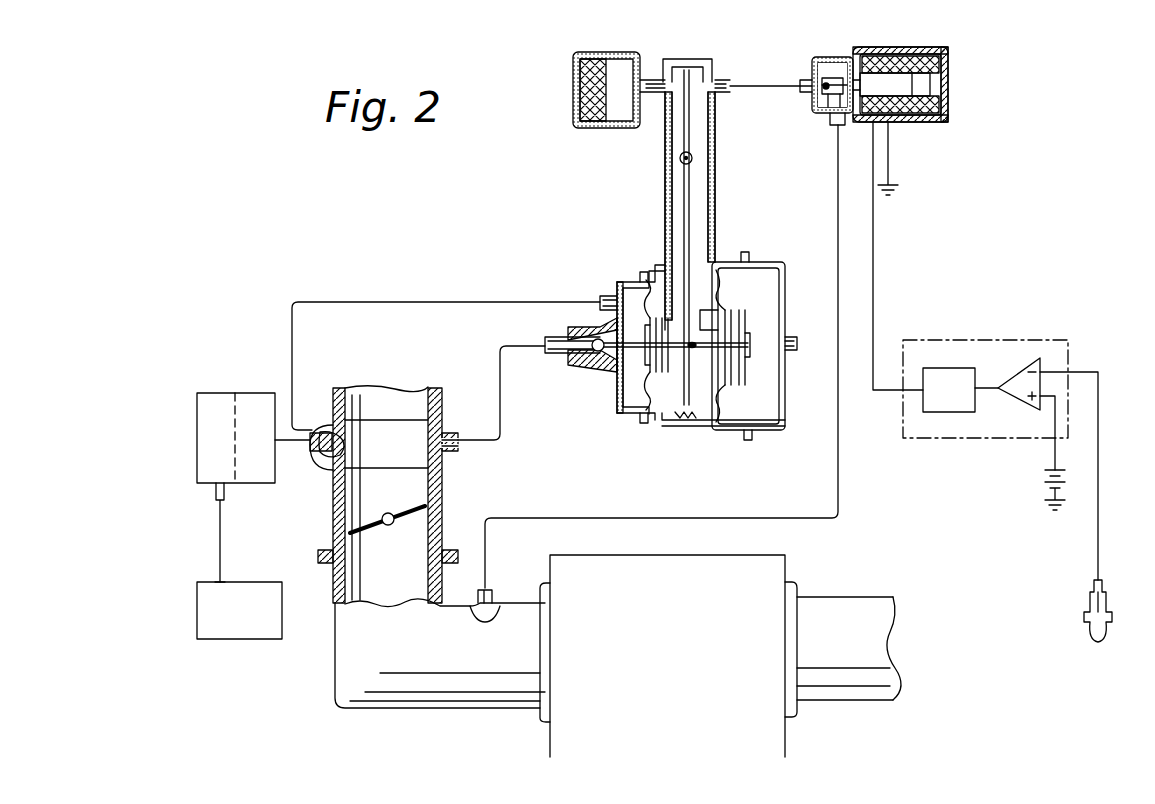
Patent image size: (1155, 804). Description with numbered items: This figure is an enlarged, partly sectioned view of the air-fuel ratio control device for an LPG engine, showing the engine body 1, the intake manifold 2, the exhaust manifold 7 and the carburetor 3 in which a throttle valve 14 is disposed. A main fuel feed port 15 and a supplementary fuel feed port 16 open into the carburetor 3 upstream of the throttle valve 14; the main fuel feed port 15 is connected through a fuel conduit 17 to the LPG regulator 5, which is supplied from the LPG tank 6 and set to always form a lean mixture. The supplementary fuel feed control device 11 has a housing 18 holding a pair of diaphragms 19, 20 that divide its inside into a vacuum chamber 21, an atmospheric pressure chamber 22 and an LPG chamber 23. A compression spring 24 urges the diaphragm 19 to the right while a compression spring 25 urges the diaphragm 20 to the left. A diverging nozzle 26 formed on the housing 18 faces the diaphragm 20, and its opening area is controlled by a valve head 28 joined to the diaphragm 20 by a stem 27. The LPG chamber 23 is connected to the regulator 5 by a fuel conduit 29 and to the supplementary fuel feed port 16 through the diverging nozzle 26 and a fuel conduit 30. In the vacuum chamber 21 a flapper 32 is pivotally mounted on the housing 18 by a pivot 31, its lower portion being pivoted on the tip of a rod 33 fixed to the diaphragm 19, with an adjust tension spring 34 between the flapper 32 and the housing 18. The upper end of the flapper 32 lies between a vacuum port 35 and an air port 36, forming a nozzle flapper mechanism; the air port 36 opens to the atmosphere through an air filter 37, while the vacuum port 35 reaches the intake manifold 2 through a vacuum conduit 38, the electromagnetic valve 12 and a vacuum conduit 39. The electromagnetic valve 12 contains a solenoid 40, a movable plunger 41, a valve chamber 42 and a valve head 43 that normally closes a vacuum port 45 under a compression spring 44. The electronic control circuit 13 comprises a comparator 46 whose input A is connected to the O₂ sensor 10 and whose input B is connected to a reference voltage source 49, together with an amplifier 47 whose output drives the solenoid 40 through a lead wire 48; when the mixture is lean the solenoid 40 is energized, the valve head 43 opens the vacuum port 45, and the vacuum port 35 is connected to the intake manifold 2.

The engine body 1 is at (558, 752).
The intake manifold 2 is at (415, 685).
The carburetor 3 is at (442, 482).
The regulator 5 is at (210, 397).
The LPG tank 6 is at (220, 632).
The exhaust manifold 7 is at (842, 686).
The O₂ sensor 10 is at (1094, 606).
The supplementary fuel feed control device 11 is at (739, 252).
The electromagnetic valve 12 is at (905, 37).
The electronic control circuit 13 is at (997, 326).
The throttle valve 14 is at (355, 528).
The main fuel feed port 15 is at (362, 410).
The supplementary fuel feed port 16 is at (425, 408).
The fuel conduit 17 is at (290, 445).
The housing 18 is at (712, 194).
The diaphragm 19 is at (745, 310).
The diaphragm 20 is at (648, 410).
The vacuum chamber 21 is at (676, 343).
The atmospheric pressure chamber 22 is at (780, 410).
The LPG chamber 23 is at (615, 395).
The compression spring 24 is at (735, 420).
The compression spring 25 is at (660, 270).
The diverging nozzle 26 is at (580, 330).
The stem 27 is at (603, 368).
The valve head 28 is at (566, 352).
The fuel conduit 29 is at (438, 302).
The fuel conduit 30 is at (498, 441).
The pivot 31 is at (693, 158).
The flapper 32 is at (690, 124).
The rod 33 is at (745, 362).
The adjust tension spring 34 is at (684, 424).
The vacuum port 35 is at (716, 78).
The air port 36 is at (650, 80).
The air filter 37 is at (578, 102).
The vacuum conduit 38 is at (778, 86).
The vacuum conduit 39 is at (840, 477).
The solenoid 40 is at (930, 122).
The movable plunger 41 is at (872, 73).
The valve chamber 42 is at (832, 65).
The valve head 43 is at (823, 110).
The compression spring 44 is at (847, 107).
The vacuum port 45 is at (822, 90).
The comparator 46 is at (1020, 395).
The amplifier 47 is at (950, 412).
The lead wire 48 is at (874, 275).
The reference voltage source 49 is at (1047, 486).
The input A is at (1045, 365).
The input B is at (1048, 395).